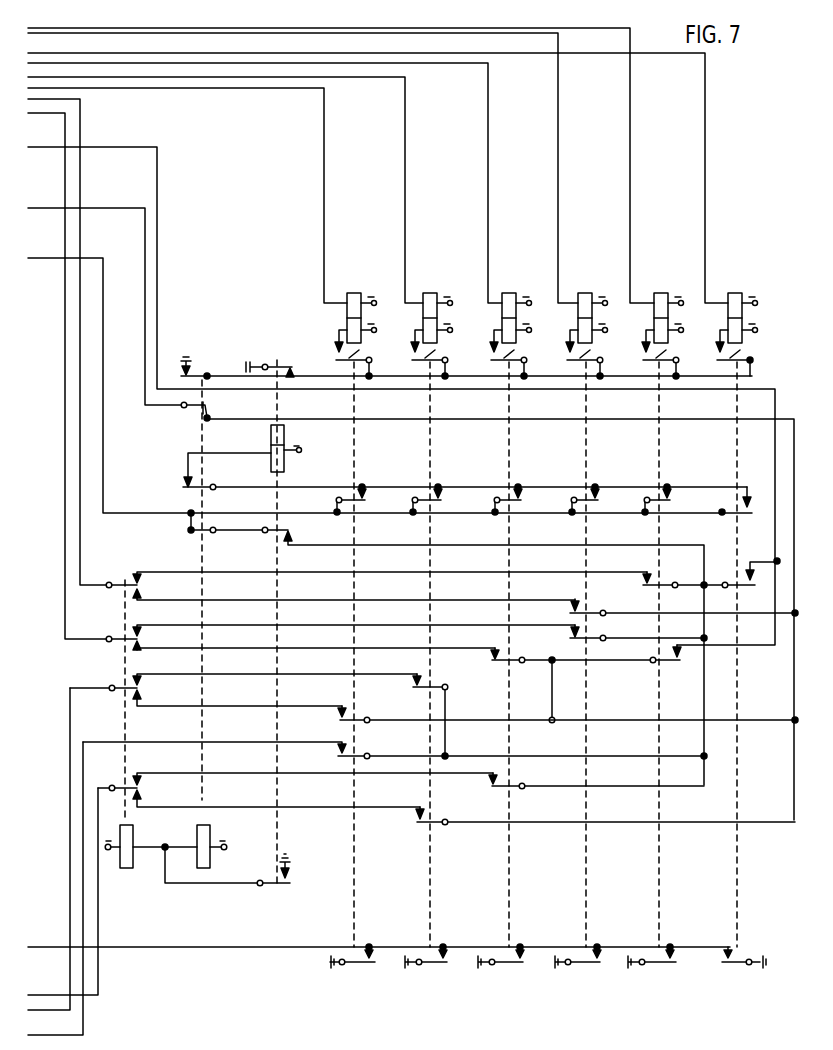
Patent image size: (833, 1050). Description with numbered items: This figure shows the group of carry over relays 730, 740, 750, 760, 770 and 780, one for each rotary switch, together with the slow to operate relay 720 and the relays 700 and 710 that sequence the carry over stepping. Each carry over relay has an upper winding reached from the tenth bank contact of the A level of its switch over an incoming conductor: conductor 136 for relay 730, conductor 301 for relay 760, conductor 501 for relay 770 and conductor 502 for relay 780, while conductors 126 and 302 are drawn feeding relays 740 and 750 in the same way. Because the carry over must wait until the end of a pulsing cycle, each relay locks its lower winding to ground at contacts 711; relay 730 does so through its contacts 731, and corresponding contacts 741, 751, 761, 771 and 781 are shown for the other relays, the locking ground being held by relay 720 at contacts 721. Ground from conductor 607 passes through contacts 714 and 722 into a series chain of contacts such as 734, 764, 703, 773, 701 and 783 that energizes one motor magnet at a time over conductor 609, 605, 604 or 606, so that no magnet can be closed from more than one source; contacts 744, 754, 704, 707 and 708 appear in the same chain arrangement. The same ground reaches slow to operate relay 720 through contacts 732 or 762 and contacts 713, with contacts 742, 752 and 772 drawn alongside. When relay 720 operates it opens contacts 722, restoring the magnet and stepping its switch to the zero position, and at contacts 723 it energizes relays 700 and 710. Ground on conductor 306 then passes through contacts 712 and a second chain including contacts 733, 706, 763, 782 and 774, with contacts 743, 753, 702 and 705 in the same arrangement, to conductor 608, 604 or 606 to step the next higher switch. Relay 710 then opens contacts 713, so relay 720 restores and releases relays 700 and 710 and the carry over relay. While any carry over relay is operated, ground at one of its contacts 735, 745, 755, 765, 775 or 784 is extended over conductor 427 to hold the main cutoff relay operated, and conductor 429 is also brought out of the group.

The conductor 501 is at (68, 28).
The conductor 301 is at (80, 35).
The conductor 502 is at (164, 53).
The conductor 302 is at (212, 62).
The conductor 126 is at (140, 78).
The conductor 136 is at (180, 89).
The conductor 604 is at (82, 118).
The conductor 605 is at (66, 135).
The conductor 606 is at (90, 148).
The conductor 306 is at (93, 208).
The conductor 607 is at (93, 258).
The carry over relay 730 is at (361, 293).
The carry over relay 740 is at (437, 293).
The carry over relay 750 is at (516, 293).
The carry over relay 760 is at (592, 293).
The carry over relay 770 is at (668, 293).
The carry over relay 780 is at (742, 293).
The contacts 731 is at (364, 354).
The relay contact 741 is at (440, 354).
The relay contact 751 is at (519, 354).
The relay contact 761 is at (595, 354).
The relay contact 771 is at (671, 354).
The relay contact 781 is at (745, 353).
The contacts 711 is at (202, 368).
The contacts 721 is at (296, 370).
The contacts 712 is at (214, 412).
The slow to operate relay 720 is at (271, 447).
The contacts 713 is at (203, 487).
The contacts 714 is at (188, 531).
The contacts 722 is at (291, 537).
The contacts 732 is at (366, 495).
The relay contact 742 is at (442, 495).
The relay contact 752 is at (522, 495).
The contacts 762 is at (599, 495).
The relay contact 772 is at (671, 495).
The contacts 782 is at (756, 498).
The contacts 701 is at (133, 579).
The contact 702 is at (143, 588).
The contacts 703 is at (130, 634).
The contact 704 is at (148, 640).
The contact 705 is at (132, 683).
The contacts 706 is at (142, 694).
The contact 707 is at (132, 780).
The contact 708 is at (142, 807).
The contacts 773 is at (638, 582).
The contacts 783 is at (745, 570).
The contacts 763 is at (580, 608).
The contacts 764 is at (580, 633).
The contacts 774 is at (656, 658).
The relay contact 753 is at (505, 658).
The relay contact 743 is at (425, 685).
The contacts 733 is at (348, 718).
The contacts 734 is at (350, 754).
The relay contact 754 is at (503, 784).
The relay contact 744 is at (428, 820).
The relay 700 is at (133, 832).
The relay 710 is at (210, 832).
The contacts 723 is at (293, 876).
The conductor 427 is at (148, 947).
The conductor 429 is at (98, 969).
The conductor 608 is at (72, 1003).
The conductor 609 is at (85, 1027).
The contacts 735 is at (376, 958).
The contacts 745 is at (450, 958).
The contacts 755 is at (526, 958).
The contacts 765 is at (603, 958).
The contacts 775 is at (678, 958).
The contacts 784 is at (722, 963).